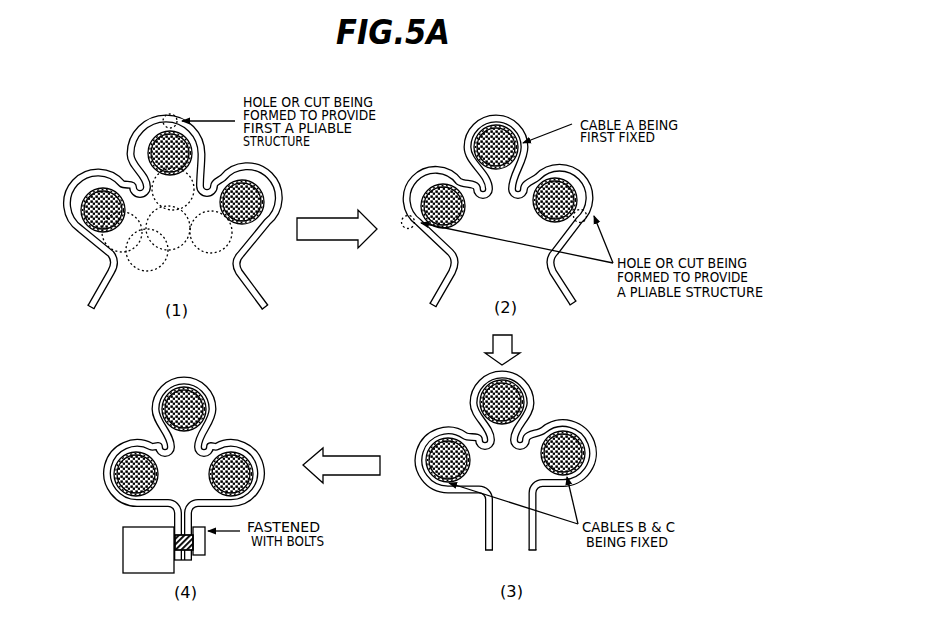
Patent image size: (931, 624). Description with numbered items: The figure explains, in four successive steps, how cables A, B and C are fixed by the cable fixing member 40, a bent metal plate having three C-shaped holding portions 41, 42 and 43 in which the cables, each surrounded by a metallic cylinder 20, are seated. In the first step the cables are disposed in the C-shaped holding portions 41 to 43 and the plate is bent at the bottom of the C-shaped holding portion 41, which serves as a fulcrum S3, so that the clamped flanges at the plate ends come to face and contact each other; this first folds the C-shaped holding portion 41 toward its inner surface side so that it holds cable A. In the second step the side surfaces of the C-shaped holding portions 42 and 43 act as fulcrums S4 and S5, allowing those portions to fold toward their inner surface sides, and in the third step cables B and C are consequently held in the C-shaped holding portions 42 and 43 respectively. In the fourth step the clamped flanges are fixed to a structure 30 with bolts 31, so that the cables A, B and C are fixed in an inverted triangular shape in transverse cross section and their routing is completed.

The cable fixing member 40 is at (131, 112).
The C-shaped holding portion 41 is at (138, 140).
The C-shaped holding portion 42 is at (110, 178).
The C-shaped holding portion 43 is at (276, 187).
The metallic cylinder 20 is at (257, 220).
The structure 30 is at (127, 556).
The bolt 31 is at (207, 552).
The fulcrum S3 is at (172, 115).
The fulcrum S4 is at (413, 228).
The fulcrum S5 is at (583, 207).